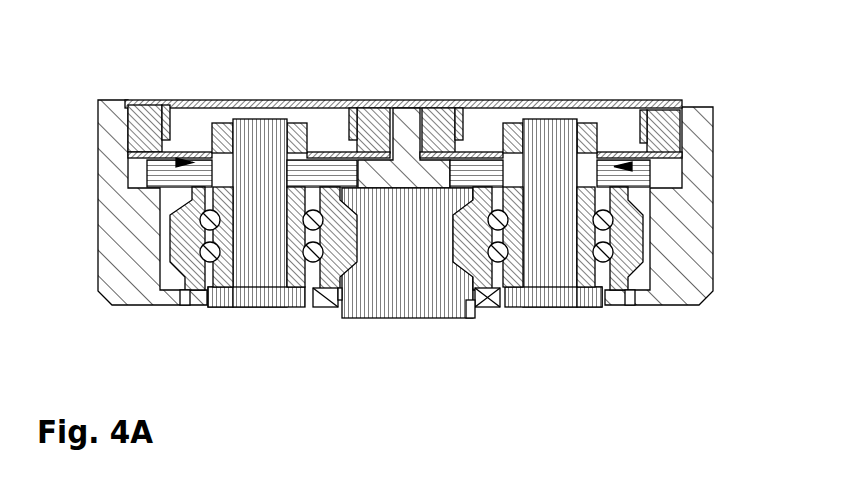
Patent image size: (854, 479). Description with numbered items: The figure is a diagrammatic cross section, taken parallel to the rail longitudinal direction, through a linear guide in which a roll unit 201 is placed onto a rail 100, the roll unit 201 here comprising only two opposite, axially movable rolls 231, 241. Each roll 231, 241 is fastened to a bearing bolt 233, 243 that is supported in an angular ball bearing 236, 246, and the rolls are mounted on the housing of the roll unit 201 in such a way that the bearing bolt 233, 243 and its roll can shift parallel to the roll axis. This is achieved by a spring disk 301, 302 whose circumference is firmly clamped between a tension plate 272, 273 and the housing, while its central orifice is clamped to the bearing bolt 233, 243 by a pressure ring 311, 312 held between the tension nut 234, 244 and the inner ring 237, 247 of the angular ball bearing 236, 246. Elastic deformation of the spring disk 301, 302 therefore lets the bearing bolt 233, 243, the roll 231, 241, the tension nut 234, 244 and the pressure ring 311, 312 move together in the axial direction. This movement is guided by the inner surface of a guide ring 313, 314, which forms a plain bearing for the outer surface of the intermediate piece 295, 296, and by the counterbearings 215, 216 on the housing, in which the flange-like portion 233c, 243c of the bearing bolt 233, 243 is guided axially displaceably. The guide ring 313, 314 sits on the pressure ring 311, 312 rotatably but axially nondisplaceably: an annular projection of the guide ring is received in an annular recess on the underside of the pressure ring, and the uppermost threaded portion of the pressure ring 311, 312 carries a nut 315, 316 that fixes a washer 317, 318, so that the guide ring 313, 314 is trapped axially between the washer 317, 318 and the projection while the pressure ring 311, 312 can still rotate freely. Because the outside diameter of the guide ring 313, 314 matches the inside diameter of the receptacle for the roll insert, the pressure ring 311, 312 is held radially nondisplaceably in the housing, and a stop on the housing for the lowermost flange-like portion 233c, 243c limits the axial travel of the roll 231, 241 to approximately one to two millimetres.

The rail 100 is at (405, 318).
The roll unit 201 is at (690, 380).
The counterbearing 215 is at (318, 307).
The counterbearing 216 is at (497, 307).
The roll 231 is at (185, 290).
The bearing bolt 233 is at (262, 119).
The flange-like portion 233c is at (214, 307).
The tension nut 234 is at (218, 123).
The angular ball bearing 236 is at (205, 237).
The inner ring 237 is at (339, 307).
The roll 241 is at (650, 305).
The bearing bolt 243 is at (555, 119).
The flange-like portion 243c is at (589, 307).
The tension nut 244 is at (595, 123).
The angular ball bearing 246 is at (605, 236).
The inner ring 247 is at (472, 318).
The tension plate 272 is at (370, 108).
The tension plate 273 is at (662, 110).
The intermediate piece 295 is at (128, 137).
The intermediate piece 296 is at (647, 152).
The spring disk 301 is at (165, 105).
The spring disk 302 is at (723, 108).
The pressure ring 311 is at (300, 123).
The pressure ring 312 is at (510, 123).
The guide ring 313 is at (150, 168).
The guide ring 314 is at (655, 172).
The nut 315 is at (200, 152).
The nut 316 is at (640, 152).
The washer 317 is at (352, 108).
The washer 318 is at (458, 108).